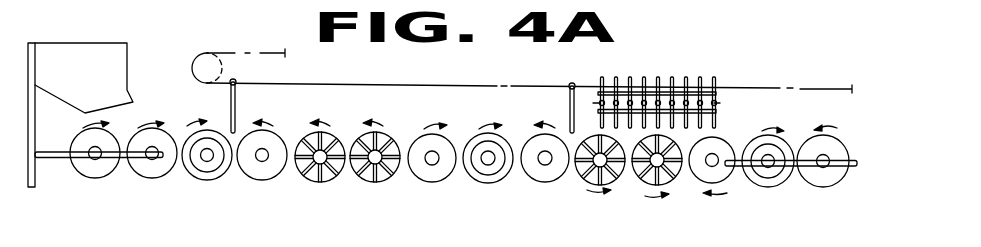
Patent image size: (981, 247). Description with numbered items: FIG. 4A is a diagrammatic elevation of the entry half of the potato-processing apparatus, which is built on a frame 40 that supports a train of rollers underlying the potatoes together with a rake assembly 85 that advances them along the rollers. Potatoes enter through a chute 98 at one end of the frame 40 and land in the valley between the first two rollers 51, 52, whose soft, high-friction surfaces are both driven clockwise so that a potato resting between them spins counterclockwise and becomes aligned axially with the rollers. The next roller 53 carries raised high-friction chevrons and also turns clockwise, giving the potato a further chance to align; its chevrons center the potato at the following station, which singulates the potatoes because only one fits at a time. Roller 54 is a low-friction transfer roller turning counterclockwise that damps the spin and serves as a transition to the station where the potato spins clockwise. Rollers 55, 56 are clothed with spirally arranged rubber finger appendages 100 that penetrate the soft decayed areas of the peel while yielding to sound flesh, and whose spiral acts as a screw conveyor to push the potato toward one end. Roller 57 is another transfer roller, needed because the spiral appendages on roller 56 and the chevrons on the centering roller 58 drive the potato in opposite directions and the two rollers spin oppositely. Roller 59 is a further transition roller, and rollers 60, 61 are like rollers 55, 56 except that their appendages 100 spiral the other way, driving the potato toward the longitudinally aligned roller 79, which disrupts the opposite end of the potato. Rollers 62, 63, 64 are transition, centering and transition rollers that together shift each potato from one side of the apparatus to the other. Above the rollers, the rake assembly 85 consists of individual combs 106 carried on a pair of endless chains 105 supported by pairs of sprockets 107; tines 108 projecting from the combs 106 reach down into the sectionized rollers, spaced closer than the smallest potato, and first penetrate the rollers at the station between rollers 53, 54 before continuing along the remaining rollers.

The frame 40 is at (37, 186).
The roller 51 is at (107, 176).
The roller 52 is at (164, 176).
The roller 53 is at (216, 178).
The transfer roller 54 is at (271, 178).
The roller 55 is at (332, 180).
The roller 56 is at (387, 180).
The transfer roller 57 is at (441, 181).
The centering roller 58 is at (500, 181).
The transition roller 59 is at (555, 181).
The roller 60 is at (617, 182).
The roller 61 is at (640, 184).
The transition roller 62 is at (728, 183).
The centering roller 63 is at (772, 187).
The transition roller 64 is at (826, 187).
The longitudinally aligned roller 79 is at (712, 78).
The rake assembly 85 is at (273, 53).
The chute 98 is at (102, 79).
The rubber finger appendages 100 is at (333, 138).
The endless chains 105 is at (338, 83).
The combs 106 is at (236, 80).
The sprockets 107 is at (226, 48).
The tines 108 is at (236, 106).